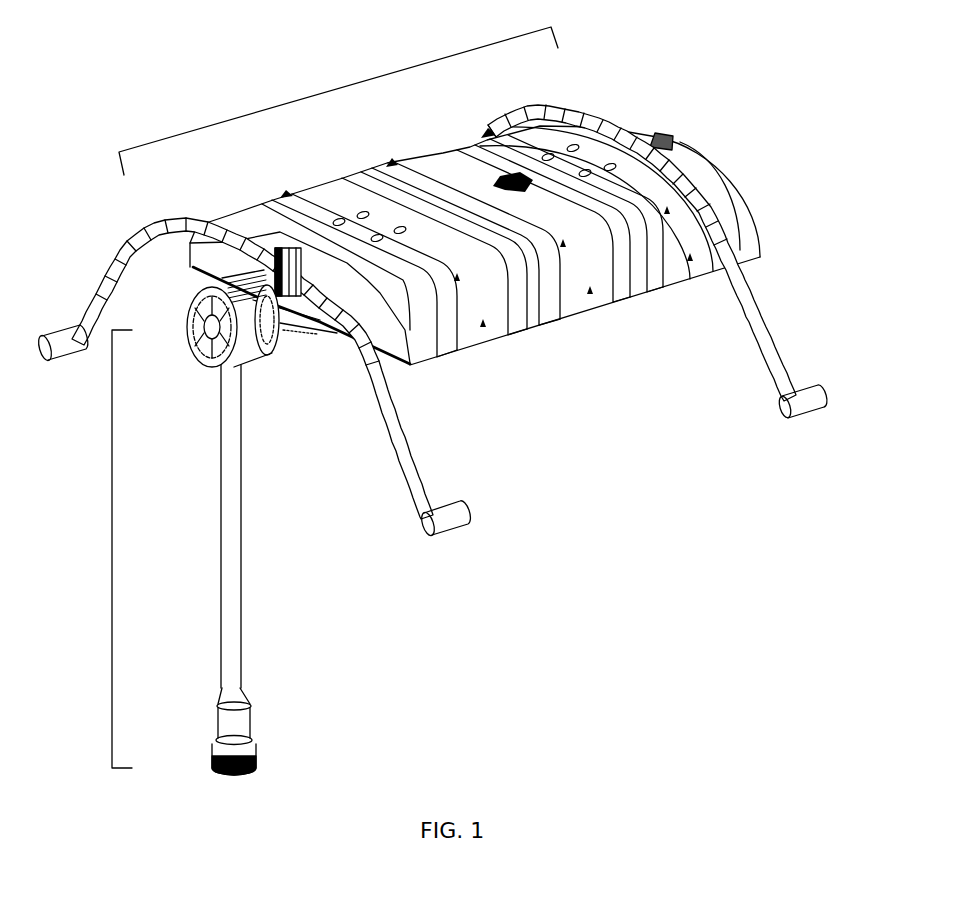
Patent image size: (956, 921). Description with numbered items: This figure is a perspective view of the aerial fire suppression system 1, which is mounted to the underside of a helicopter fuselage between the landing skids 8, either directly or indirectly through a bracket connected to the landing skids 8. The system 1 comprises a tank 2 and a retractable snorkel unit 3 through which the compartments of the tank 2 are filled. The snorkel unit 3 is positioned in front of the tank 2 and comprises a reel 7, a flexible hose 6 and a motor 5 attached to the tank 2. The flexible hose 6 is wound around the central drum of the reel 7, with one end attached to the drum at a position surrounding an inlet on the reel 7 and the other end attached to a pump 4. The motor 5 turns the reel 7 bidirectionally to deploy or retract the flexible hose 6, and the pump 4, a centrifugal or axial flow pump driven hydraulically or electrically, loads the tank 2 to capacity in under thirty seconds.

The aerial fire suppression system 1 is at (333, 83).
The tank 2 is at (597, 313).
The retractable snorkel unit 3 is at (112, 548).
The pump 4 is at (252, 717).
The motor 5 is at (200, 352).
The flexible hose 6 is at (247, 533).
The reel 7 is at (273, 350).
The landing skids 8 is at (803, 418).